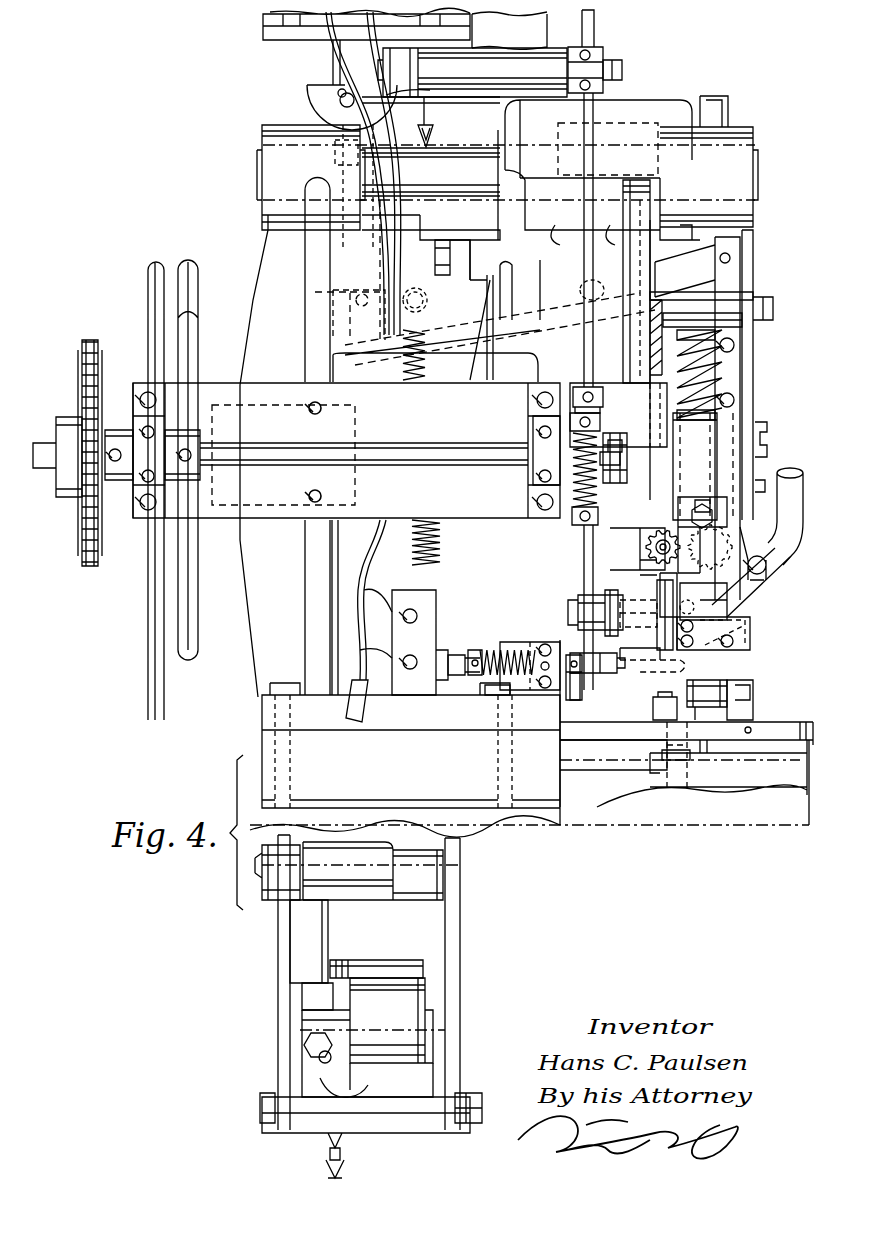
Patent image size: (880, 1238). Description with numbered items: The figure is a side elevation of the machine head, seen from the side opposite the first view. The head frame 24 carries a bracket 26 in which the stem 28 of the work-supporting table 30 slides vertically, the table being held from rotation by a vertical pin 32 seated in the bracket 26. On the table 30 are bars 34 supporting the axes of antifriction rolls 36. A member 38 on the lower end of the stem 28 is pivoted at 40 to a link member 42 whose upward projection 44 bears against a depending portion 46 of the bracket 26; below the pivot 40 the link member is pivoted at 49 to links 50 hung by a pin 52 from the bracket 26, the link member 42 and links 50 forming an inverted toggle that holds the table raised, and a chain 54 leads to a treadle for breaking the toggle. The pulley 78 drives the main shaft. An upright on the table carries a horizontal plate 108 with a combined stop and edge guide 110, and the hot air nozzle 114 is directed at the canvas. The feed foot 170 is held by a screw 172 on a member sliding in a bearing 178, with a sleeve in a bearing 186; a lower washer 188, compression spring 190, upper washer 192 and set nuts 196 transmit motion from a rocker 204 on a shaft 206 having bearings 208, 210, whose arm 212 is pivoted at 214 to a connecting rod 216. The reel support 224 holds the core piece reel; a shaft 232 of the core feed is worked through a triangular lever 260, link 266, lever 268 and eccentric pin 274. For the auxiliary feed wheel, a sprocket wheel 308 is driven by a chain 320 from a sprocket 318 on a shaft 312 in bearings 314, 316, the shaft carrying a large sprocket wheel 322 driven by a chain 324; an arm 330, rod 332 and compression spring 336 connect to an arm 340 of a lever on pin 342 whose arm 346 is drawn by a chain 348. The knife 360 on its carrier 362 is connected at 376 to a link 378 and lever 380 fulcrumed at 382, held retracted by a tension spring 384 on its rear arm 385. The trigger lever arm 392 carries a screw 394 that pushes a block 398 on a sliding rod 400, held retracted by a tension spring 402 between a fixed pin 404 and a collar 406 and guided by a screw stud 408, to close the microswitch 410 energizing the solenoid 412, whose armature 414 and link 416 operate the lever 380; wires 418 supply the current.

The head frame 24 is at (268, 263).
The bracket 26 is at (462, 850).
The stem 28 is at (765, 750).
The work-supporting table 30 is at (776, 720).
The vertical pin 32 is at (685, 770).
The bars 34 is at (672, 690).
The antifriction rolls 36 is at (703, 682).
The member 38 is at (398, 980).
The pivot 40 is at (440, 1038).
The link member 42 is at (360, 1095).
The upward projection 44 is at (310, 992).
The depending portion 46 is at (308, 940).
The pivot 49 is at (468, 1100).
The links 50 is at (462, 916).
The pin 52 is at (352, 880).
The chain 54 is at (325, 1158).
The pulley 78 is at (198, 650).
The horizontal plate 108 is at (638, 658).
The combined stop and edge guide 110 is at (680, 676).
The hot air nozzle 114 is at (772, 560).
The four-motion feed foot 170 is at (688, 490).
The screw 172 is at (702, 507).
The bearing 178 is at (650, 462).
The bearing 186 is at (712, 288).
The lower flanged washer 188 is at (665, 455).
The compression spring 190 is at (732, 368).
The upper flanged washer 192 is at (705, 352).
The set nuts 196 is at (735, 122).
The rocker 204 is at (672, 118).
The shaft 206 is at (470, 180).
The bearing 208 is at (286, 125).
The bearing 210 is at (616, 212).
The arm 212 is at (500, 312).
The pivot 214 is at (448, 260).
The connecting rod 216 is at (480, 345).
The reel support 224 is at (535, 40).
The shaft 232 is at (660, 545).
The triangular lever 260 is at (788, 516).
The link 266 is at (762, 553).
The lever 268 is at (756, 396).
The pin or screw 274 is at (770, 448).
The sprocket wheel 308 is at (610, 630).
The shaft 312 is at (412, 450).
The bearing 314 is at (530, 462).
The bearing 316 is at (165, 438).
The sprocket 318 is at (612, 430).
The sprocket chain 320 is at (616, 440).
The large sprocket wheel 322 is at (92, 568).
The chain 324 is at (96, 560).
The arm 330 is at (549, 450).
The rod 332 is at (596, 32).
The compression spring 336 is at (572, 520).
The arm 340 is at (604, 80).
The pin 342 is at (622, 70).
The arm 346 is at (422, 74).
The chain 348 is at (430, 130).
The knife 360 is at (755, 625).
The carrier 362 is at (750, 605).
The connection 376 is at (740, 585).
The link 378 is at (772, 292).
The lever 380 is at (715, 255).
The fulcrum 382 is at (580, 300).
The tension spring 384 is at (432, 540).
The rear arm 385 is at (440, 392).
The arm 392 is at (597, 676).
The screw 394 is at (595, 695).
The block 398 is at (565, 690).
The sliding rod 400 is at (466, 650).
The tension spring 402 is at (490, 678).
The fixed pin 404 is at (545, 640).
The collar 406 is at (490, 655).
The fixed screw stud 408 is at (575, 700).
The microswitch 410 is at (420, 598).
The solenoid 412 is at (278, 24).
The armature 414 is at (335, 70).
The link 416 is at (315, 292).
The wires 418 is at (378, 525).